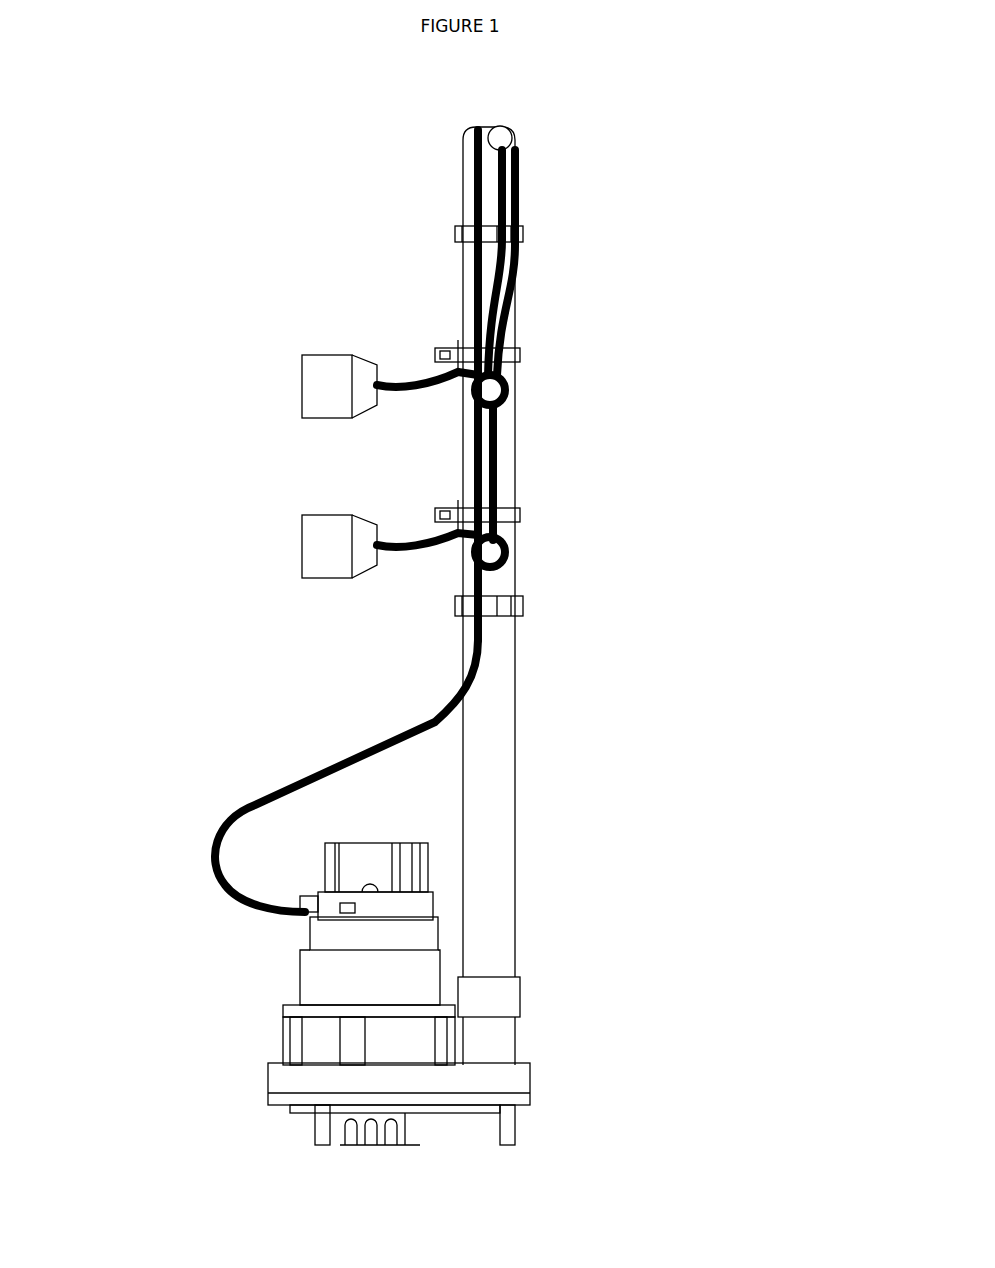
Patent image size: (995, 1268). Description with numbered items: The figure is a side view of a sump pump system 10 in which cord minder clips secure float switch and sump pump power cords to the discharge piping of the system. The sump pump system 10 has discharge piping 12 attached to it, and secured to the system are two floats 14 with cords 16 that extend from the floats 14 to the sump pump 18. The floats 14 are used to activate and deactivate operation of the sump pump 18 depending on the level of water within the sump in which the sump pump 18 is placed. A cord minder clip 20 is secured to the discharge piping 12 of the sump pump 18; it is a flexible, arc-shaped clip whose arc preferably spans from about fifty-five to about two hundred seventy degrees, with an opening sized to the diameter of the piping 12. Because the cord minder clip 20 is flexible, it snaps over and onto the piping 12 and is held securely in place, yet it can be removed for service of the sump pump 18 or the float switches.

The sump pump system 10 is at (461, 635).
The discharge piping 12 is at (503, 800).
The floats 14 is at (302, 382).
The cords 16 is at (400, 372).
The sump pump 18 is at (212, 973).
The cord minder clip 20 is at (520, 588).